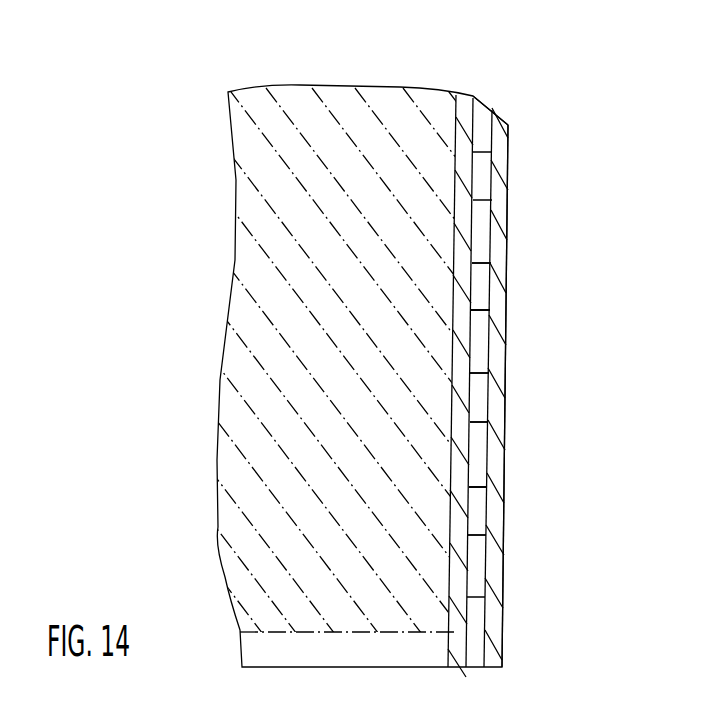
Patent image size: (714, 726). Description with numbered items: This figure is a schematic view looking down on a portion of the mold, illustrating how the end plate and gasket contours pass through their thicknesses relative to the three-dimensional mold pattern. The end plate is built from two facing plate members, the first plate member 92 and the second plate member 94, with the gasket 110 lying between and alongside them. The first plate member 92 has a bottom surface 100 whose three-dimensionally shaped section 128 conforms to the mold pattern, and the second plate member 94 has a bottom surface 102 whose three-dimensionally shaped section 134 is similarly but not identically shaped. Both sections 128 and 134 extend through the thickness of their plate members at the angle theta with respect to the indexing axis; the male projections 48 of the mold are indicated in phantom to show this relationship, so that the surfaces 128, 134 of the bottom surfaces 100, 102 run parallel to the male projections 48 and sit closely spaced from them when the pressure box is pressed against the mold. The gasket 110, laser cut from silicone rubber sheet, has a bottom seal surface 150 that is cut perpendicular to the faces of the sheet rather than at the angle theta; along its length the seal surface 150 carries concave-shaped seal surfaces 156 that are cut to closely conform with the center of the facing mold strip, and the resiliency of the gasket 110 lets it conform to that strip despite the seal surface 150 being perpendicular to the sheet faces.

The male projections 48 is at (242, 393).
The second plate member 94 is at (467, 97).
The gasket 110 is at (485, 100).
The seal surface 150 is at (480, 135).
The first plate member 92 is at (512, 200).
The bottom surface of first plate member 100 is at (500, 257).
The three-dimensionally shaped section 128 is at (493, 336).
The bottom surface of second plate member 102 is at (460, 448).
The concave-shaped seal surfaces 156 is at (474, 488).
The three-dimensionally shaped section 134 is at (462, 520).